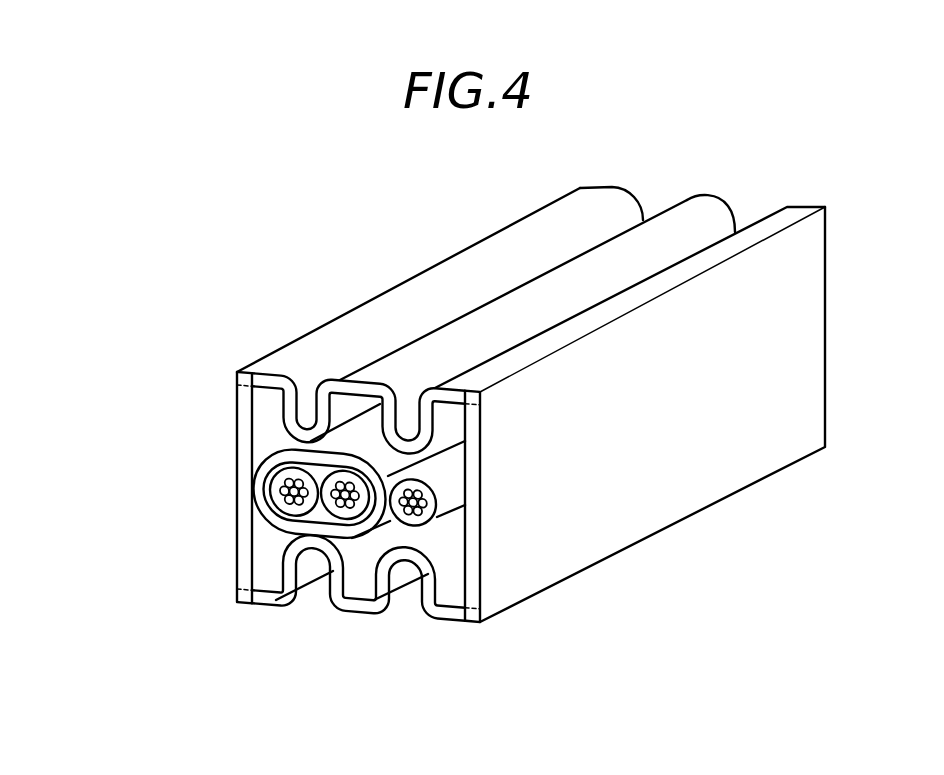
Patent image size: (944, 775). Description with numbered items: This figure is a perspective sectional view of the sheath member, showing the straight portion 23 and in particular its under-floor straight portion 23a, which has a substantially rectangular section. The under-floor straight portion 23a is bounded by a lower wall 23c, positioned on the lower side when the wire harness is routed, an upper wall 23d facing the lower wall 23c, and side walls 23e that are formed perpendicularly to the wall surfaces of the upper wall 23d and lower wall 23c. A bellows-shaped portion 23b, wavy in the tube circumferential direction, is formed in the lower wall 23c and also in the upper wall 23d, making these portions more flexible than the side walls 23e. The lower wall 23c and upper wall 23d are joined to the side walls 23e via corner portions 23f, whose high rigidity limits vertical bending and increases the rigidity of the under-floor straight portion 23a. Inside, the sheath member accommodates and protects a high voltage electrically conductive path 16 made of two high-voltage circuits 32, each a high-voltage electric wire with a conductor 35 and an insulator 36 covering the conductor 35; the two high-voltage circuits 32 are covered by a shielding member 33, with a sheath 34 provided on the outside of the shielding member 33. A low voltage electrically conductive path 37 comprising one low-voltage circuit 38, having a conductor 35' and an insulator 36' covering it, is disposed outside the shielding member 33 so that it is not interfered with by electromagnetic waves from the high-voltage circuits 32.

The straight portion 23 is at (341, 293).
The under-floor straight portion 23a is at (452, 447).
The bellows-shaped portion 23b is at (508, 323).
The lower wall 23c is at (270, 598).
The upper wall 23d is at (500, 260).
The side walls 23e is at (238, 470).
The corner portions 23f is at (405, 292).
The high voltage electrically conductive path 16 is at (253, 547).
The high-voltage circuit 32 is at (322, 662).
The shielding member 33 is at (312, 456).
The sheath 34 is at (258, 507).
The conductor 35 is at (339, 564).
The insulator 36 is at (308, 570).
The conductor 35' is at (446, 570).
The insulator 36' is at (430, 576).
The low voltage electrically conductive path 37 is at (456, 491).
The low-voltage circuit 38 is at (495, 662).